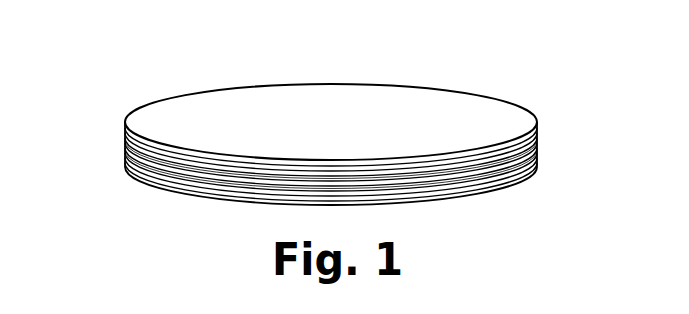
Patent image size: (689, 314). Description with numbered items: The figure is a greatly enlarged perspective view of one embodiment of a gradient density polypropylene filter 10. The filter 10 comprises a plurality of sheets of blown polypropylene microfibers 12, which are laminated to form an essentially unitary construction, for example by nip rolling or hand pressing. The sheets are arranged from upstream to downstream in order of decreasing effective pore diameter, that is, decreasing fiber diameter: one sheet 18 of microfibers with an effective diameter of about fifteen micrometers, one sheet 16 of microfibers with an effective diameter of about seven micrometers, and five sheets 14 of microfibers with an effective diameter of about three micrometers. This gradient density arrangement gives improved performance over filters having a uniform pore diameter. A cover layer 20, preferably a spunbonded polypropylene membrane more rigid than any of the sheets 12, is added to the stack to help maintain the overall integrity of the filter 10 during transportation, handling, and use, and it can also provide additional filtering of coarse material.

The filter 10 is at (194, 70).
The sheets of blown polypropylene microfibers 12 is at (362, 143).
The downstream sheets 14 is at (185, 175).
The sheet 16 is at (147, 180).
The sheet 18 is at (127, 142).
The cover layer 20 is at (147, 105).